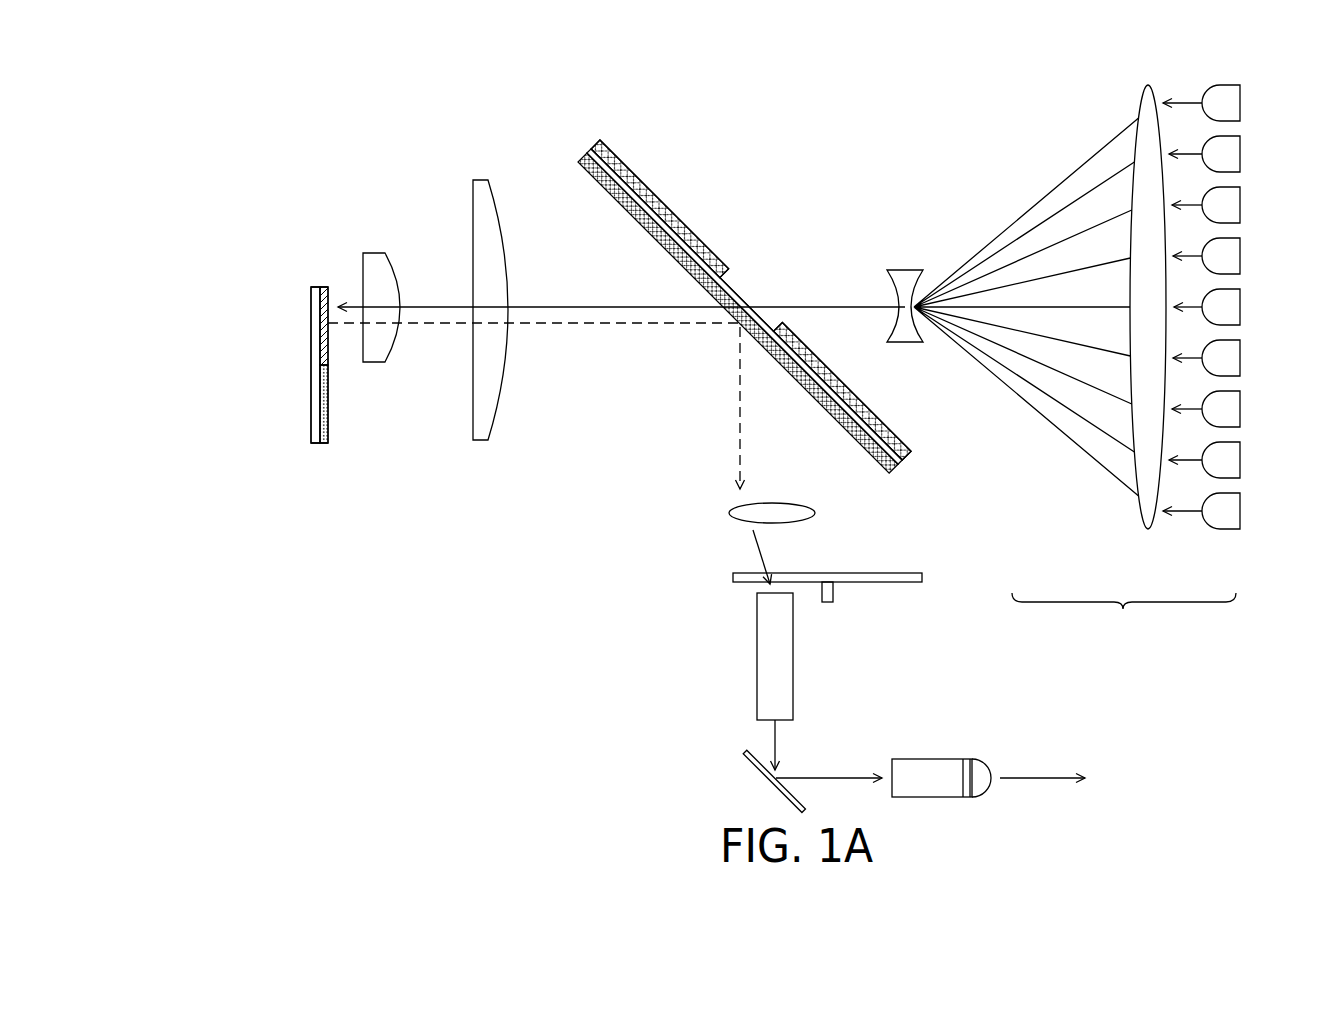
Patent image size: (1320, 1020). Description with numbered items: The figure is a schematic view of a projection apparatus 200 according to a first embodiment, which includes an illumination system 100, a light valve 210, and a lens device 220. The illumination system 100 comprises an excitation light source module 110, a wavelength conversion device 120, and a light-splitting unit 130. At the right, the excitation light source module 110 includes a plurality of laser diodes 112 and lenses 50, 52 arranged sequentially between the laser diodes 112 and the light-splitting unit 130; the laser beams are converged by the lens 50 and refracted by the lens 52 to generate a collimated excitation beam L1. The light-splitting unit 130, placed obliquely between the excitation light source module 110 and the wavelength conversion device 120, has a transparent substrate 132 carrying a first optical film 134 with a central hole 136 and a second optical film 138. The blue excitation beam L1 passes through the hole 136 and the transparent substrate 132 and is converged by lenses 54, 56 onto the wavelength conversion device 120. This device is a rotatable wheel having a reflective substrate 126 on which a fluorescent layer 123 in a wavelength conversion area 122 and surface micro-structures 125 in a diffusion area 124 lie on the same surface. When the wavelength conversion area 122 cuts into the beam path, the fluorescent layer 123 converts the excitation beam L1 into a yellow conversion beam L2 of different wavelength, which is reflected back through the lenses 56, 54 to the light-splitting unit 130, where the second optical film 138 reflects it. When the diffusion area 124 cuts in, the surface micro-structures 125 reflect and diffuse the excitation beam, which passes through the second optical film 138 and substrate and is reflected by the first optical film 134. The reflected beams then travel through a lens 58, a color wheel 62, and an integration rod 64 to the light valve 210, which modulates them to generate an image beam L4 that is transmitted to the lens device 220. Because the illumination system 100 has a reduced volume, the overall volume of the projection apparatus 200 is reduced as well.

The illumination system 100 is at (254, 345).
The wavelength conversion device 120 is at (322, 240).
The wavelength conversion area 122 is at (335, 288).
The fluorescent layer 123 is at (324, 288).
The diffusion area 124 is at (338, 409).
The surface micro-structures 125 is at (323, 444).
The reflective substrate 126 is at (313, 393).
The lens 56 is at (378, 262).
The lens 54 is at (484, 190).
The light-splitting unit 130 is at (684, 124).
The transparent substrate 132 is at (588, 152).
The first optical film 134 is at (620, 157).
The hole 136 is at (735, 272).
The second optical film 138 is at (586, 158).
The lens 52 is at (907, 343).
The lens 50 is at (1143, 519).
The laser diodes 112 is at (1228, 538).
The excitation light source module 110 is at (1124, 619).
The lens 58 is at (807, 515).
The color wheel 62 is at (923, 577).
The integration rod 64 is at (787, 637).
The light valve 210 is at (745, 752).
The lens device 220 is at (980, 765).
The projection apparatus 200 is at (1228, 766).
The excitation beam L1 is at (827, 305).
The conversion beam L2 is at (573, 326).
The image beam L4 is at (833, 777).